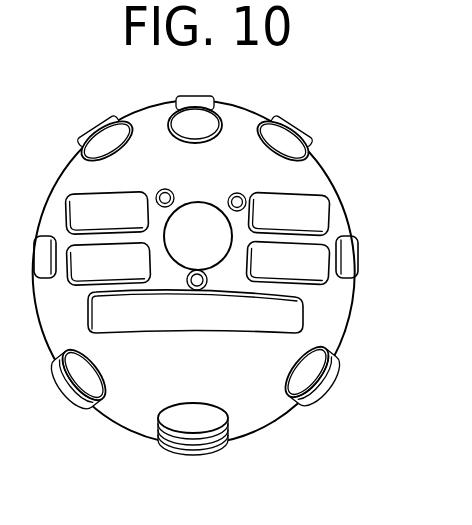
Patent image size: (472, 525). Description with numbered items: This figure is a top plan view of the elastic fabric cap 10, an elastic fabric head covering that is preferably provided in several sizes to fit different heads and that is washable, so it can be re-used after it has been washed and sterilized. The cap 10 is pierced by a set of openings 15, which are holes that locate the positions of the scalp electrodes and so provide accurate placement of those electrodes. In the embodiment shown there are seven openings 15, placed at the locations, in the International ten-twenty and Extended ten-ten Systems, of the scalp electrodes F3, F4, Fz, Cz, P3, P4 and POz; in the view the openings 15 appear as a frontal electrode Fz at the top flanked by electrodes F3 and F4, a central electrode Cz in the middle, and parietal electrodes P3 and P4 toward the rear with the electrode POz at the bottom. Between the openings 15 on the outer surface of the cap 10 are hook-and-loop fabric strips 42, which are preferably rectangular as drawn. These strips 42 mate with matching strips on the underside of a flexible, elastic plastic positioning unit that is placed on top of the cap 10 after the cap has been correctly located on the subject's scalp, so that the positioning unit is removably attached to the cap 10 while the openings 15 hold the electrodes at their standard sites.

The cap 10 is at (308, 183).
The openings 15 is at (333, 367).
The hook-and-loop fabric strips 42 is at (318, 222).
The scalp electrode Cz is at (198, 236).
The scalp electrode Fz FZ is at (207, 125).
The scalp electrode F3 is at (110, 142).
The scalp electrode F4 is at (286, 147).
The scalp electrode P3 is at (80, 388).
The scalp electrode P4 is at (308, 380).
The scalp electrode POz is at (200, 430).